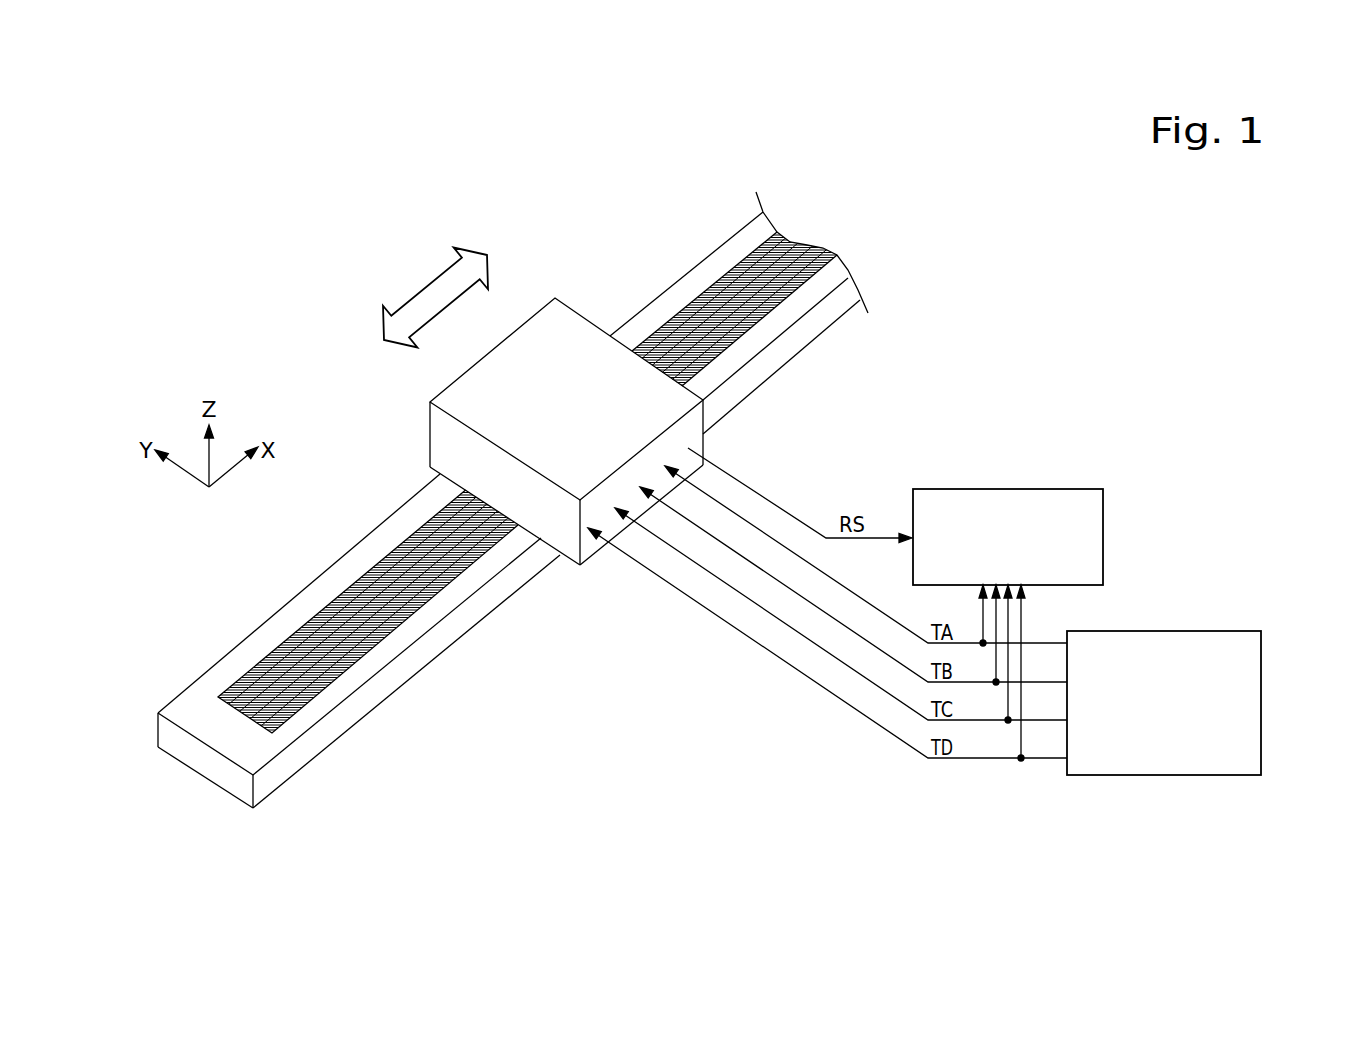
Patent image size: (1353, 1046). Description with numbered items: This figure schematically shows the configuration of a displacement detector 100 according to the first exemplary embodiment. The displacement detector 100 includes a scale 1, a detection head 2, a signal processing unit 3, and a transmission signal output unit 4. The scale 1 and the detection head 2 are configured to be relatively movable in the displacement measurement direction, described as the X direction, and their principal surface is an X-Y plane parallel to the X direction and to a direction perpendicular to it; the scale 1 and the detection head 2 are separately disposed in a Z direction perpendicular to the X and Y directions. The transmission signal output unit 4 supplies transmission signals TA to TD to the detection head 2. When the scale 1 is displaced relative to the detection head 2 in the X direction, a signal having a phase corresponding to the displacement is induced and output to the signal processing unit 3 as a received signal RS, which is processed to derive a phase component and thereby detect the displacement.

The displacement detector 100 is at (246, 286).
The scale 1 is at (193, 700).
The detection head 2 is at (575, 328).
The signal processing unit 3 is at (1064, 489).
The transmission signal output unit 4 is at (1239, 631).